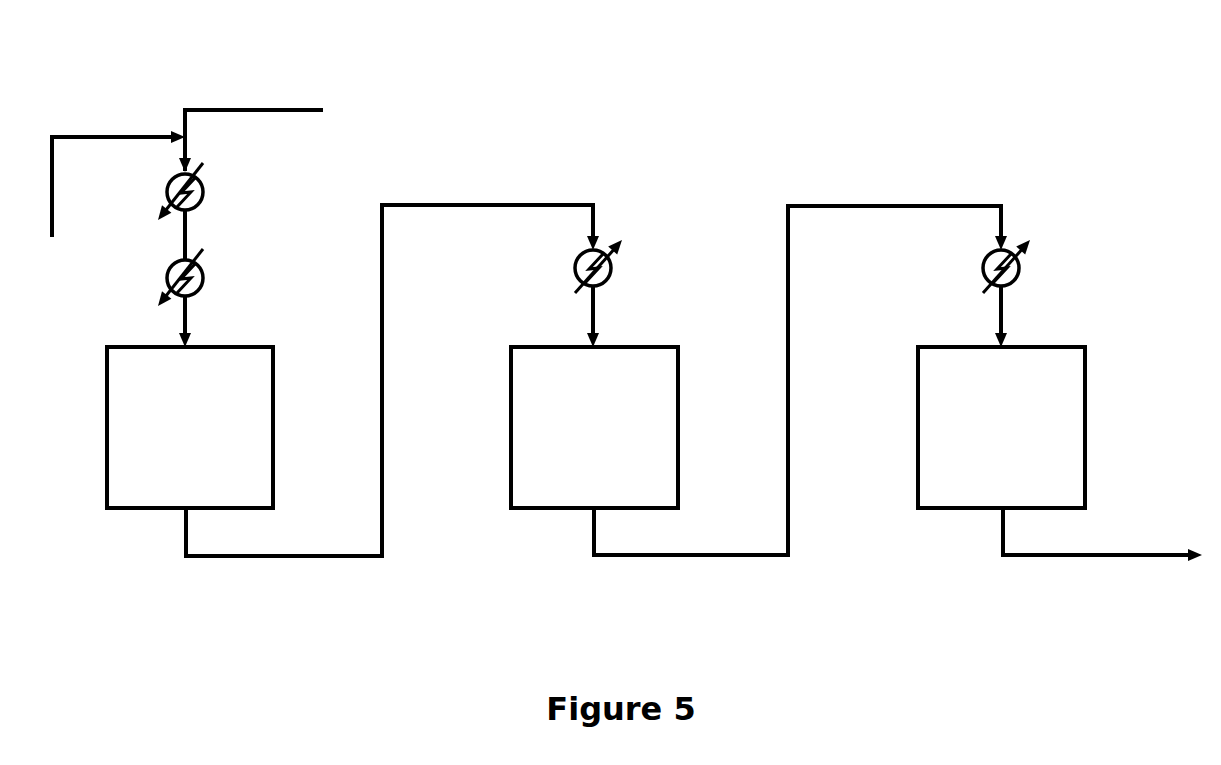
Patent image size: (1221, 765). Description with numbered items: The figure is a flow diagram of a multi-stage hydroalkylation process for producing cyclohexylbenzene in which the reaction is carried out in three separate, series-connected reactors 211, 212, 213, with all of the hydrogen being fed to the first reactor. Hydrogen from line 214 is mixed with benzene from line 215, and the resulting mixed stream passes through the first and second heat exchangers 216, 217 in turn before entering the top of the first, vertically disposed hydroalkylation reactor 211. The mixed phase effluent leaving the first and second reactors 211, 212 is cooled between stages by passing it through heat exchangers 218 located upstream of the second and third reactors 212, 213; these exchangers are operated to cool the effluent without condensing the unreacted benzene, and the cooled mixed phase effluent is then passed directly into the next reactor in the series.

The first hydroalkylation reactor 211 is at (190, 427).
The second hydroalkylation reactor 212 is at (594, 427).
The third hydroalkylation reactor 213 is at (1001, 427).
The hydrogen line 214 is at (227, 109).
The benzene line 215 is at (132, 137).
The first heat exchanger 216 is at (203, 187).
The second heat exchanger 217 is at (203, 280).
The interstage heat exchanger 218 is at (611, 270).